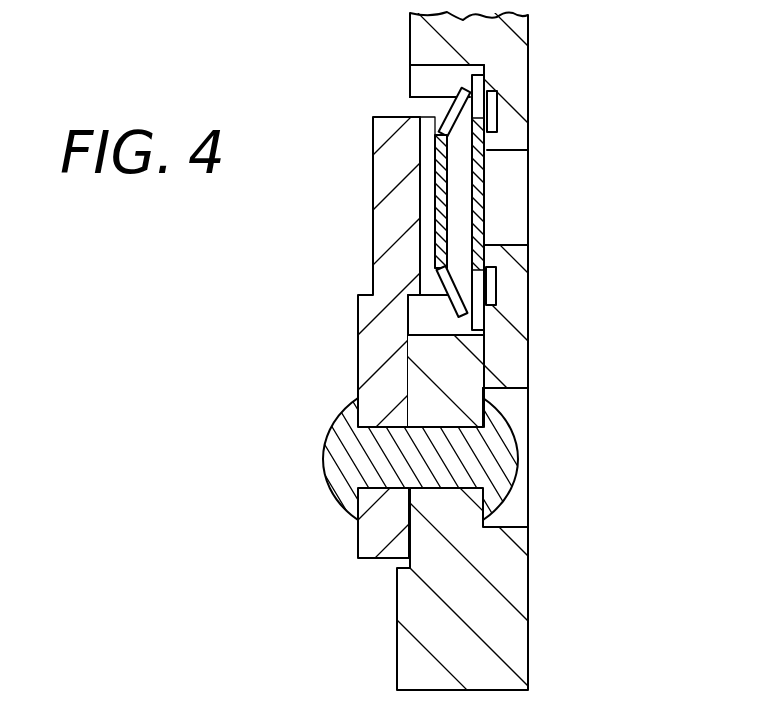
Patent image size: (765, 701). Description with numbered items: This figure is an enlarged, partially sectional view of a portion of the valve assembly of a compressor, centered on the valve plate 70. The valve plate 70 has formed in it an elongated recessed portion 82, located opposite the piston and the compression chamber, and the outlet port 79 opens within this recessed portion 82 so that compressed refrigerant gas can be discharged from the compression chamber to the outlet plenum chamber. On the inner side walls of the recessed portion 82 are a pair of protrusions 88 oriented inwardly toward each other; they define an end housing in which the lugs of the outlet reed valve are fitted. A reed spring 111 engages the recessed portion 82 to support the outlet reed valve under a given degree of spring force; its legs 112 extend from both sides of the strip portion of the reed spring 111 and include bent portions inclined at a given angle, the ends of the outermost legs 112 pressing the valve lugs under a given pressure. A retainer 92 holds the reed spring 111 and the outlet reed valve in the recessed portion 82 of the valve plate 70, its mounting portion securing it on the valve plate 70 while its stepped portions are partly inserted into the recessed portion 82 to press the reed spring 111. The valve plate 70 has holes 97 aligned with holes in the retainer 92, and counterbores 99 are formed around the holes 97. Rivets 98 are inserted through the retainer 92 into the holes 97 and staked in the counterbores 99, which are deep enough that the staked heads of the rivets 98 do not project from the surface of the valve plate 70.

The valve plate 70 is at (497, 46).
The outlet port 79 is at (510, 172).
The elongated recessed portion 82 is at (428, 103).
The protrusions 88 is at (422, 80).
The retainer 92 is at (388, 270).
The holes 97 is at (453, 428).
The rivets 98 is at (345, 475).
The counterbores 99 is at (513, 507).
The reed spring 111 is at (438, 212).
The legs 112 is at (448, 300).